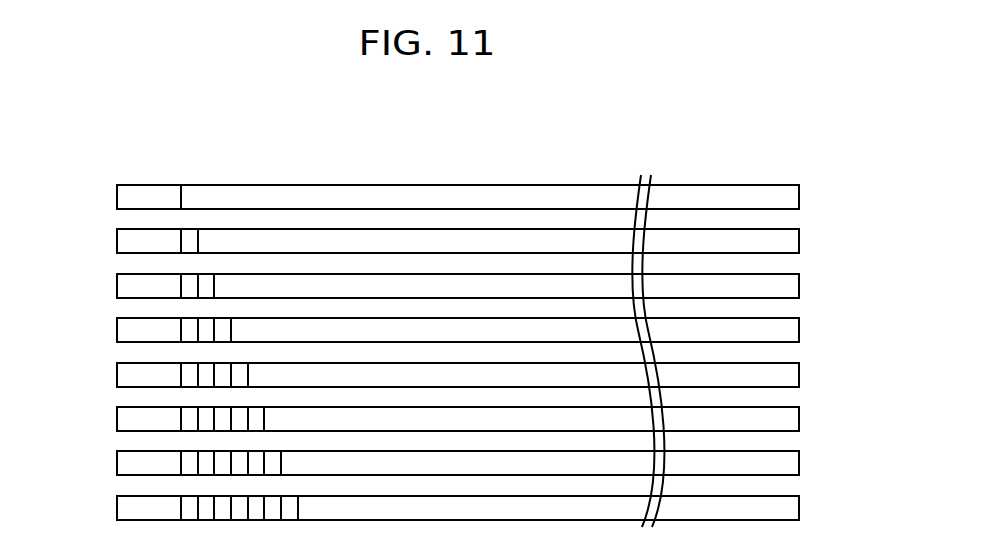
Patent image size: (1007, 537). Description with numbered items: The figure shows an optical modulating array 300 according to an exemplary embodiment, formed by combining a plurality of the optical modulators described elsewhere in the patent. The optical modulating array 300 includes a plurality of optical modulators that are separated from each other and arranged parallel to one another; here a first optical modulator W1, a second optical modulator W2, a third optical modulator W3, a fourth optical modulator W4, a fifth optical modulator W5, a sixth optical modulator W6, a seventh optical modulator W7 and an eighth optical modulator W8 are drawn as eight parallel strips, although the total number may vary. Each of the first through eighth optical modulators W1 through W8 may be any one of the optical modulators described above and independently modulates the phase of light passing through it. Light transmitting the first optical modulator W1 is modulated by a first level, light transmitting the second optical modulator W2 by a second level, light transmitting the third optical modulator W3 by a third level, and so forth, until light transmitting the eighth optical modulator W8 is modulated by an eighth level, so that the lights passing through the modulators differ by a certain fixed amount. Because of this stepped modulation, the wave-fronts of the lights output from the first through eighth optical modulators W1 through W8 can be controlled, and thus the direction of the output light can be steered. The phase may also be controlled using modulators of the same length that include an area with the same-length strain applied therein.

The optical modulating array 300 is at (702, 126).
The first optical modulator W1 is at (117, 197).
The second optical modulator W2 is at (117, 241).
The third optical modulator W3 is at (117, 286).
The fourth optical modulator W4 is at (117, 330).
The fifth optical modulator W5 is at (117, 375).
The sixth optical modulator W6 is at (117, 419).
The seventh optical modulator W7 is at (117, 463).
The eighth optical modulator W8 is at (117, 508).